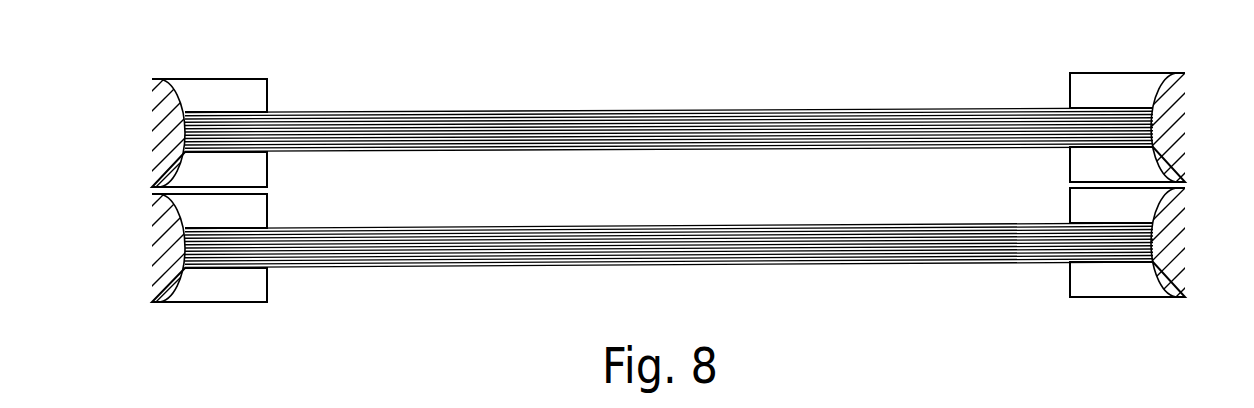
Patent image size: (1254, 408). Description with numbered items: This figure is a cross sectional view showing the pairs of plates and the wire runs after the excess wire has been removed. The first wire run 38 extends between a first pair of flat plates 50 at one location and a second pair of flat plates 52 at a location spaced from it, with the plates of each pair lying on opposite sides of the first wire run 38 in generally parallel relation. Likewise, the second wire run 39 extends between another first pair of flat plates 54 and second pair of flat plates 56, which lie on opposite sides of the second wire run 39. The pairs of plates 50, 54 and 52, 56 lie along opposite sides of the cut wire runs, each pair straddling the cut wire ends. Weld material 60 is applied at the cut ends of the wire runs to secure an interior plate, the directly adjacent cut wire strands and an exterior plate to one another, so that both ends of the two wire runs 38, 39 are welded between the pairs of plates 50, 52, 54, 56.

The first wire run 38 is at (645, 112).
The second wire run 39 is at (665, 228).
The first pair of flat plates 50 is at (218, 83).
The second pair of flat plates 52 is at (1117, 78).
The first pair of flat plates of the second set 54 is at (267, 200).
The second pair of flat plates of the second set 56 is at (1070, 195).
The weld material 60 is at (158, 141).